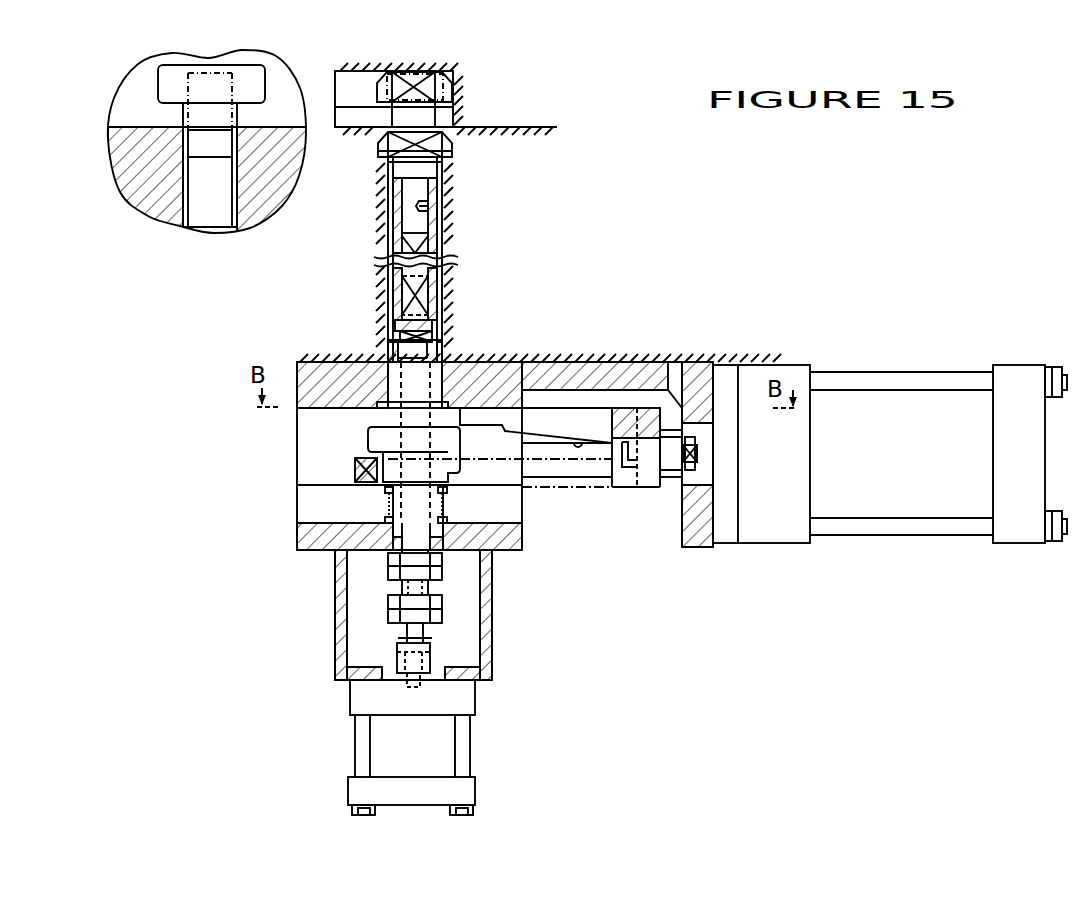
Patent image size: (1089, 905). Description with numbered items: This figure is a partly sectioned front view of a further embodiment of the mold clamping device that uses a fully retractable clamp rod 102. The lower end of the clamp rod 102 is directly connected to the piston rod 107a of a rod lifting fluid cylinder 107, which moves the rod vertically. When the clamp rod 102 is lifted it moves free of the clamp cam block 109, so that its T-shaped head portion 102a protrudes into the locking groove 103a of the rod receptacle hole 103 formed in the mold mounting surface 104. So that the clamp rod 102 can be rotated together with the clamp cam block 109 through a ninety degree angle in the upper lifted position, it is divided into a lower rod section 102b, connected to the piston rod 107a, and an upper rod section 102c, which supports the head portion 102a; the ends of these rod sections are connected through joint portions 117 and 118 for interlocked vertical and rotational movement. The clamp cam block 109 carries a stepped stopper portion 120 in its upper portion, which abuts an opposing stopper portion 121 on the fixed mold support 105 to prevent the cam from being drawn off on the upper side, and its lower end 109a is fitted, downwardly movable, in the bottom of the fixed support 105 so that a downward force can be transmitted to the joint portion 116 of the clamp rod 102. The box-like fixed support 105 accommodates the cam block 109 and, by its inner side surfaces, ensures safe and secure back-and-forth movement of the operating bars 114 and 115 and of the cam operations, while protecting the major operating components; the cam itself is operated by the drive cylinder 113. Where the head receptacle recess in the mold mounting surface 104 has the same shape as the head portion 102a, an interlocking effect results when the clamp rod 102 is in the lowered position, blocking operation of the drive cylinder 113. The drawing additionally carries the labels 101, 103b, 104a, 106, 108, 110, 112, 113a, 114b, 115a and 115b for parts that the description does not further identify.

The mounting plate 101 is at (456, 84).
The clamp rod 102 is at (447, 277).
The head portion 102a is at (395, 150).
The lower rod section 102b is at (392, 340).
The upper rod section 102c is at (442, 220).
The rod receptacle hole 103 is at (333, 83).
The locking groove 103a is at (250, 92).
The bolt neck 103b is at (357, 103).
The mold mounting surface 104 is at (517, 126).
The nut 104a is at (453, 152).
The fixed mold support 105 is at (300, 350).
The housing 106 is at (337, 593).
The rod lifting fluid cylinder 107 is at (437, 753).
The piston rod 107a is at (424, 658).
The lower body wall 108 is at (383, 512).
The clamp cam block 109 is at (366, 445).
The lower end of clamp cam block 109a is at (388, 548).
The slide collar 110 is at (456, 426).
The axis line 112 is at (515, 505).
The drive cylinder 113 is at (906, 413).
The cylinder end cap 113a is at (697, 517).
The operating bar 114 is at (553, 413).
The slide block 114b is at (588, 438).
The operating bar 115 is at (577, 488).
The bearing block 115a is at (357, 468).
The seal rings 115b is at (383, 493).
The joint portion 116 is at (387, 602).
The joint portion 117 is at (447, 335).
The joint portion 118 is at (392, 317).
The stepped stopper portion 120 is at (384, 373).
The opposing stopper portion 121 is at (447, 402).